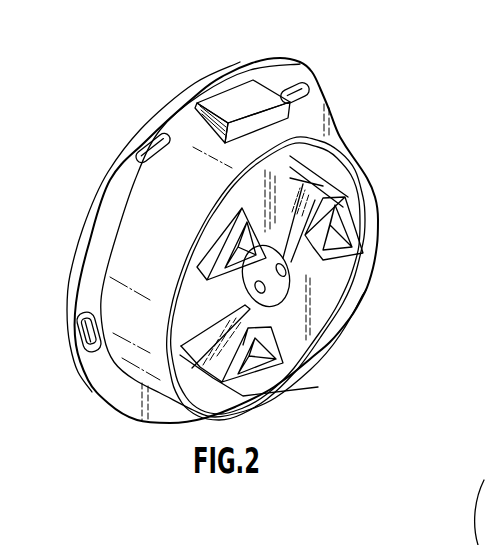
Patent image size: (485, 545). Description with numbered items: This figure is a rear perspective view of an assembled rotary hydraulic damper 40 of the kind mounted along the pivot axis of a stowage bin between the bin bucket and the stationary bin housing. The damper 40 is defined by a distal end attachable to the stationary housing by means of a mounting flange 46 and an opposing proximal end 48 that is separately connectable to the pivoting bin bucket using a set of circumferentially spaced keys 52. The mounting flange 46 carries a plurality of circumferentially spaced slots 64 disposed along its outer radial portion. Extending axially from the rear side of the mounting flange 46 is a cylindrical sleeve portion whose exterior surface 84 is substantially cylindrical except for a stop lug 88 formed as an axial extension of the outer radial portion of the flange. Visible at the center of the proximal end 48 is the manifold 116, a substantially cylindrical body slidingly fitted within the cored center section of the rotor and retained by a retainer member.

The rotary hydraulic damper 40 is at (159, 22).
The mounting flange 46 is at (110, 193).
The proximal end 48 is at (352, 306).
The circumferentially spaced keys 52 is at (232, 250).
The circumferentially spaced slots 64 is at (143, 150).
The exterior surface 84 is at (192, 163).
The stop lug 88 is at (241, 103).
The manifold 116 is at (276, 283).